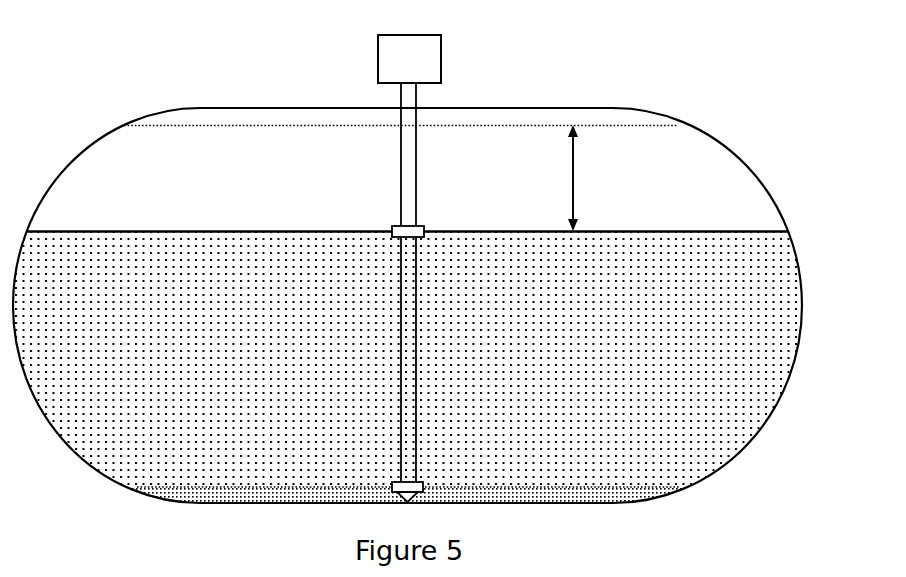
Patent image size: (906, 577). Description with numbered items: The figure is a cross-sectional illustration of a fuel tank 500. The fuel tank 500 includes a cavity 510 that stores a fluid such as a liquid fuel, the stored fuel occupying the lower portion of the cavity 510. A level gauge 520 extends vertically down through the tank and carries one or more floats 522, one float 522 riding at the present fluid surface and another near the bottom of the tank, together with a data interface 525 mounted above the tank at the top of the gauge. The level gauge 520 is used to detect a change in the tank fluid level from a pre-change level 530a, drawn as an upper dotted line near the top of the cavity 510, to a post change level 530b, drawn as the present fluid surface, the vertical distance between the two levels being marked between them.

The fuel tank 500 is at (122, 59).
The cavity 510 is at (160, 208).
The level gauge 520 is at (408, 97).
The floats 522 is at (424, 232).
The data interface 525 is at (437, 58).
The pre-change level 530a is at (336, 126).
The post change level 530b is at (262, 230).